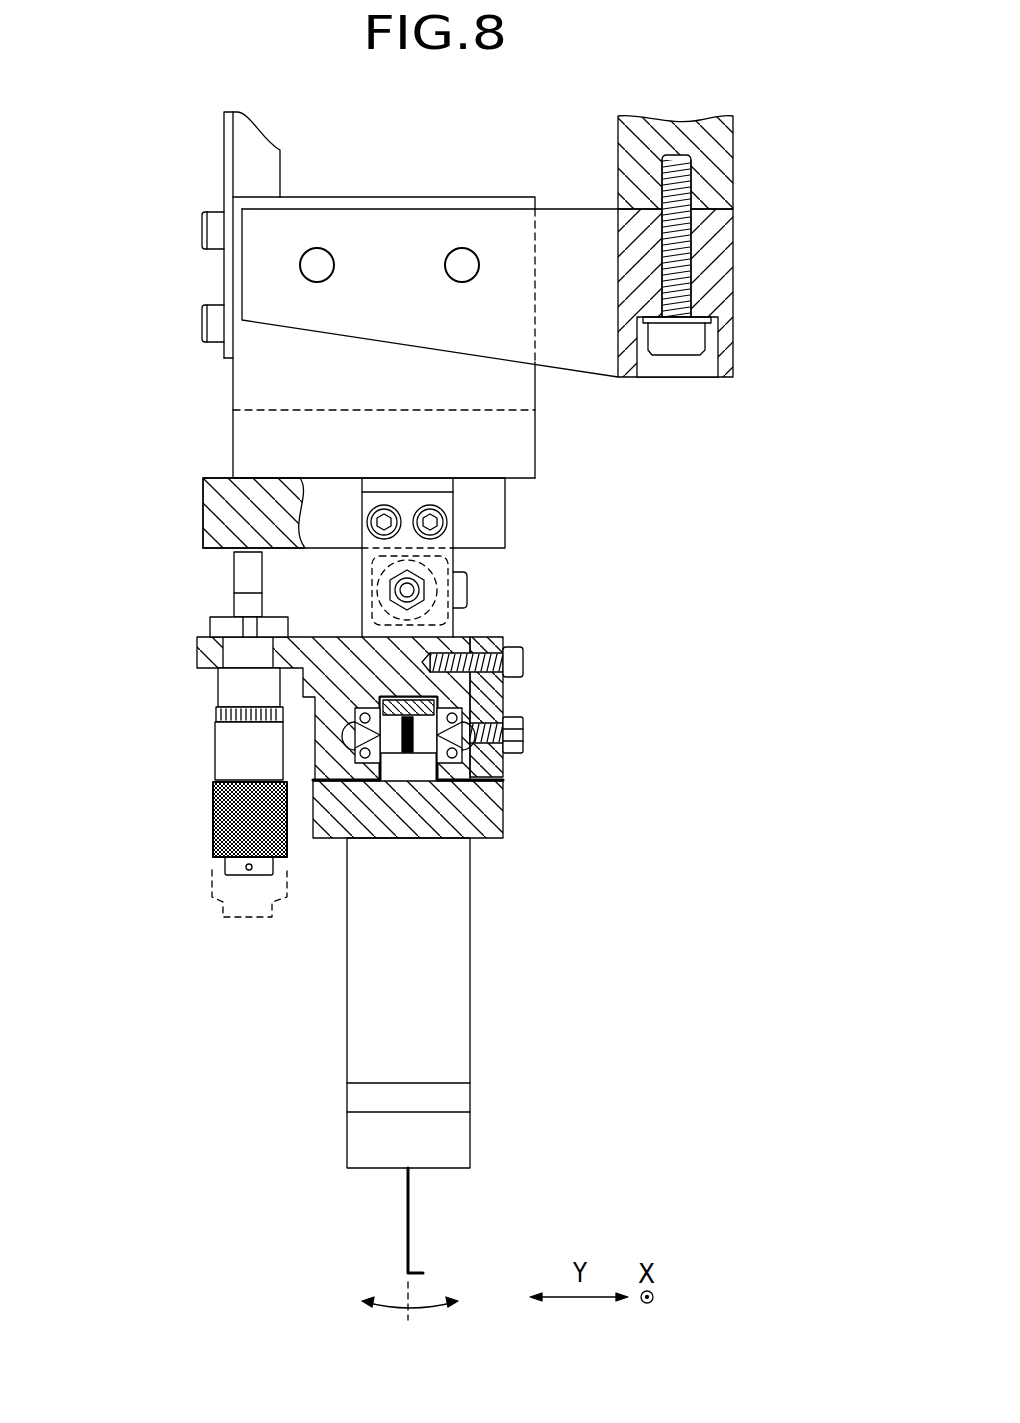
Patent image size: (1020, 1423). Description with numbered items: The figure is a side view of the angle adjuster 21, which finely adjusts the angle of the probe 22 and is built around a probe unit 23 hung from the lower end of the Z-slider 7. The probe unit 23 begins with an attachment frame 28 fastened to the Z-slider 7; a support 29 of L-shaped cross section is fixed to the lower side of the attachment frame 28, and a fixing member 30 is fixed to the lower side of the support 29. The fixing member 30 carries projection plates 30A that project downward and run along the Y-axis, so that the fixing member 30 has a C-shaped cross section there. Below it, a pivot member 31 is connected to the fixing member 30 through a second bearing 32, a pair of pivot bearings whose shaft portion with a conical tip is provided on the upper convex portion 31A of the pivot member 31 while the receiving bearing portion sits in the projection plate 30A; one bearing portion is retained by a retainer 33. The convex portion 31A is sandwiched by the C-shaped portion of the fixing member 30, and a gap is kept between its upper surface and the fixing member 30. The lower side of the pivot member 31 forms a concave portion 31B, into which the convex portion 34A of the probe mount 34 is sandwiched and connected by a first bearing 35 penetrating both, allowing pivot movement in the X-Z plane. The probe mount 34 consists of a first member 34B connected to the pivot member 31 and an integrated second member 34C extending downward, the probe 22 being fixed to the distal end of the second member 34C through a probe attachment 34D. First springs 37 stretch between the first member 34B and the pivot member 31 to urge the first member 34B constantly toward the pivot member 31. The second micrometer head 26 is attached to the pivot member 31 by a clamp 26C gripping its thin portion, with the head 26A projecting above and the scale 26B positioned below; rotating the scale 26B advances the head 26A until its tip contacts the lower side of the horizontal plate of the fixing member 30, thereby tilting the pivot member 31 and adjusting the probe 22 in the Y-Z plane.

The Z-slider 7 is at (730, 162).
The angle adjuster 21 is at (183, 418).
The probe 22 is at (410, 1220).
The probe unit 23 is at (203, 522).
The second micrometer head 26 is at (168, 666).
The head 26A is at (230, 577).
The scale 26B is at (190, 724).
The clamp 26C is at (210, 627).
The attachment frame 28 is at (718, 270).
The support 29 is at (523, 444).
The fixing member 30 is at (503, 507).
The projection plate 30A is at (455, 562).
The pivot member 31 is at (332, 768).
The convex portion 31A is at (450, 636).
The concave portion 31B is at (240, 790).
The second bearing 32 is at (430, 606).
The retainer 33 is at (490, 695).
The probe mount 34 is at (476, 932).
The convex portion 34A is at (423, 767).
The first member 34B is at (493, 827).
The second member 34C is at (450, 940).
The probe attachment 34D is at (462, 1142).
The first bearing 35 is at (407, 768).
The first spring 37 is at (267, 557).